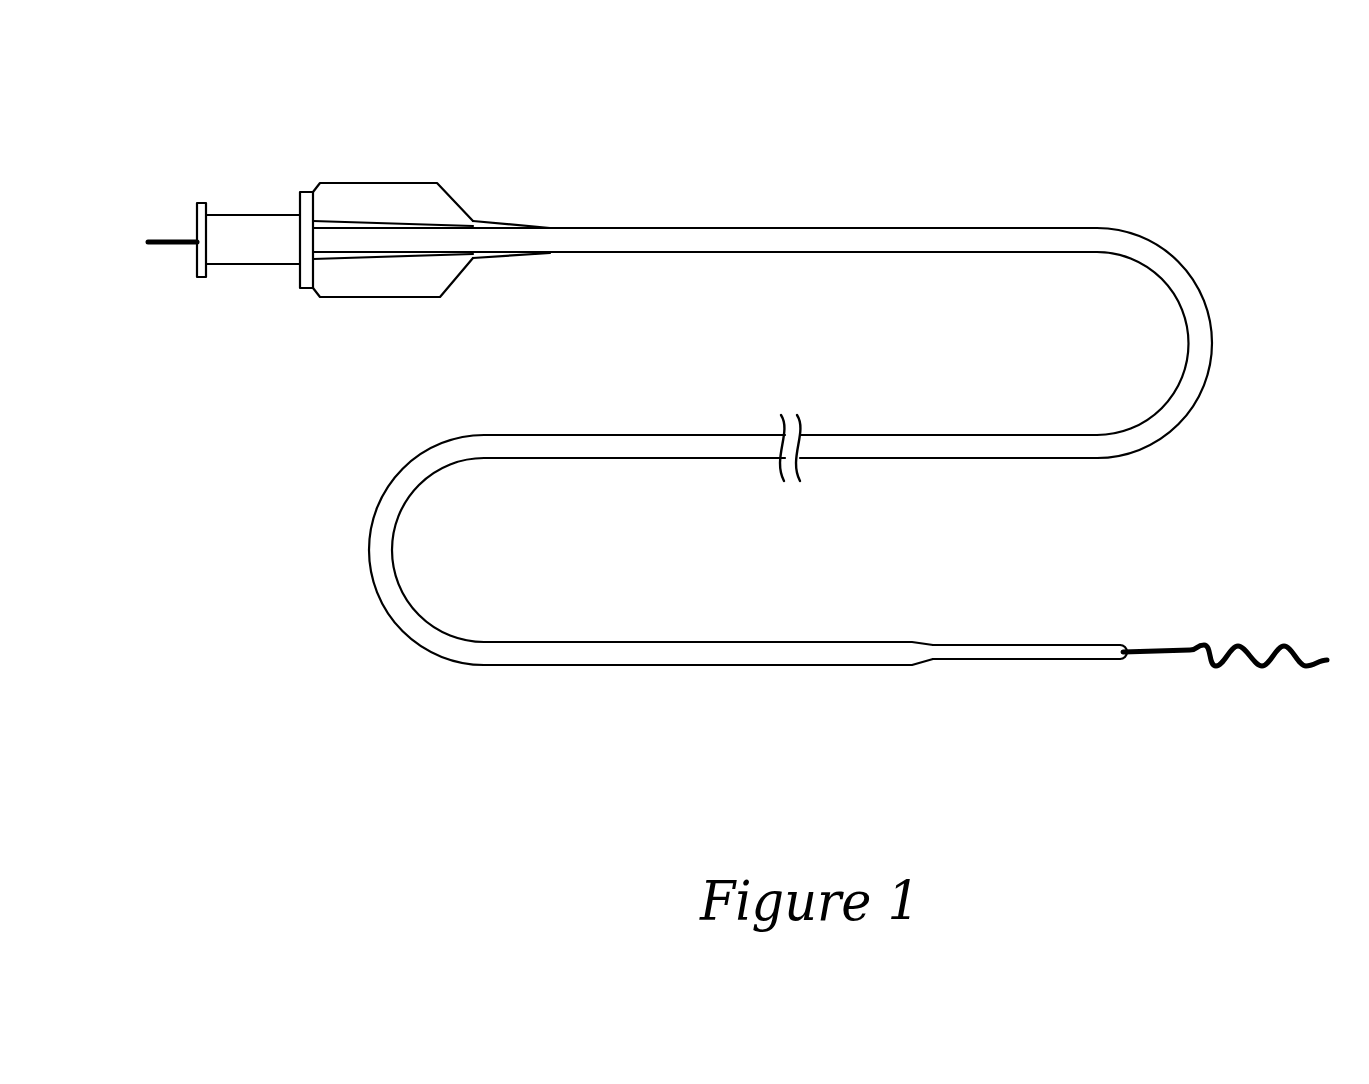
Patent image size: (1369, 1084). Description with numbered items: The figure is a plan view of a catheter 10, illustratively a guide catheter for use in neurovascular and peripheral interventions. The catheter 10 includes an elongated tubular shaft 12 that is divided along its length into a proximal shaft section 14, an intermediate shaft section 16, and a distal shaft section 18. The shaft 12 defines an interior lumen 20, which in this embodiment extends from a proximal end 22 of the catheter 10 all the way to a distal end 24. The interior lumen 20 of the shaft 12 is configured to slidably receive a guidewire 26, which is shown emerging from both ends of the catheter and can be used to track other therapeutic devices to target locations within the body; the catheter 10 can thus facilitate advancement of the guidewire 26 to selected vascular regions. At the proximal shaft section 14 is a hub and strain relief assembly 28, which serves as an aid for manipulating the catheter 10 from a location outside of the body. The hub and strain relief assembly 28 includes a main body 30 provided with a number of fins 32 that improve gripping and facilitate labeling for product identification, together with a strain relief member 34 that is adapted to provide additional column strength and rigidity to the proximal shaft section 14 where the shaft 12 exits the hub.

The catheter 10 is at (972, 182).
The elongated tubular shaft 12 is at (1107, 233).
The proximal shaft section 14 is at (673, 212).
The intermediate shaft section 16 is at (930, 627).
The distal shaft section 18 is at (1033, 627).
The interior lumen 20 is at (772, 237).
The proximal end 22 is at (198, 203).
The distal end 24 is at (1123, 645).
The guidewire 26 is at (172, 246).
The hub and strain relief assembly 28 is at (323, 157).
The main body 30 is at (353, 242).
The fins 32 is at (436, 206).
The strain relief member 34 is at (516, 223).